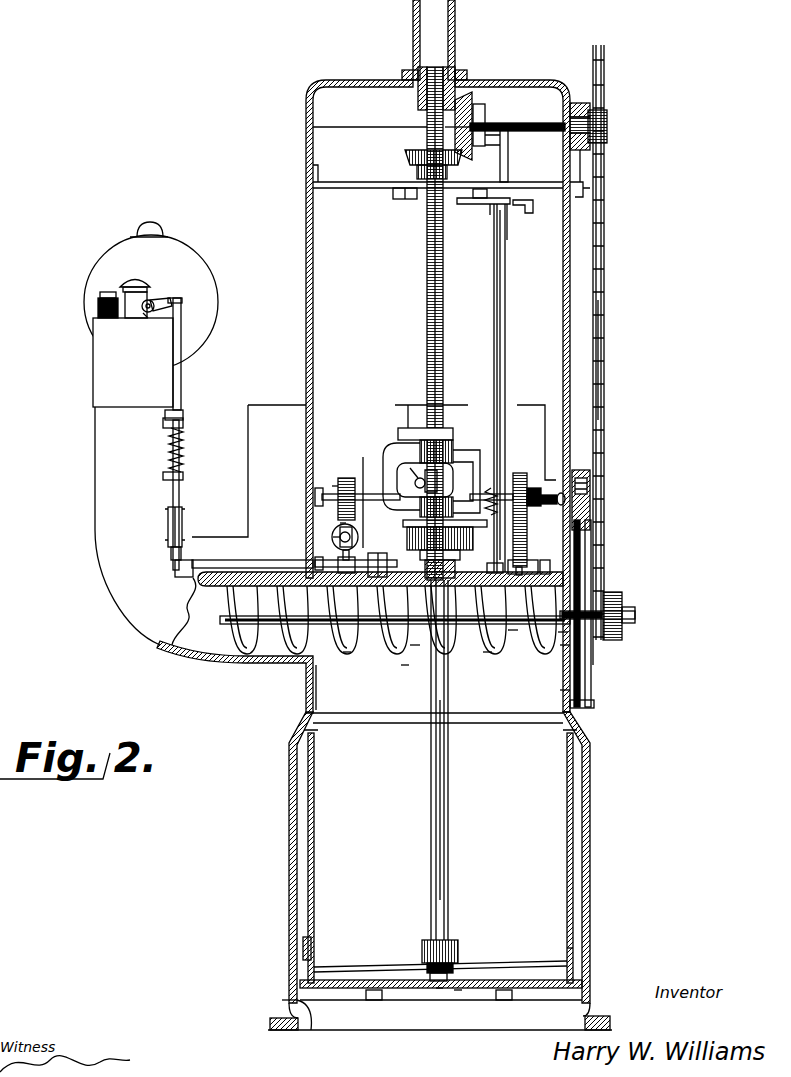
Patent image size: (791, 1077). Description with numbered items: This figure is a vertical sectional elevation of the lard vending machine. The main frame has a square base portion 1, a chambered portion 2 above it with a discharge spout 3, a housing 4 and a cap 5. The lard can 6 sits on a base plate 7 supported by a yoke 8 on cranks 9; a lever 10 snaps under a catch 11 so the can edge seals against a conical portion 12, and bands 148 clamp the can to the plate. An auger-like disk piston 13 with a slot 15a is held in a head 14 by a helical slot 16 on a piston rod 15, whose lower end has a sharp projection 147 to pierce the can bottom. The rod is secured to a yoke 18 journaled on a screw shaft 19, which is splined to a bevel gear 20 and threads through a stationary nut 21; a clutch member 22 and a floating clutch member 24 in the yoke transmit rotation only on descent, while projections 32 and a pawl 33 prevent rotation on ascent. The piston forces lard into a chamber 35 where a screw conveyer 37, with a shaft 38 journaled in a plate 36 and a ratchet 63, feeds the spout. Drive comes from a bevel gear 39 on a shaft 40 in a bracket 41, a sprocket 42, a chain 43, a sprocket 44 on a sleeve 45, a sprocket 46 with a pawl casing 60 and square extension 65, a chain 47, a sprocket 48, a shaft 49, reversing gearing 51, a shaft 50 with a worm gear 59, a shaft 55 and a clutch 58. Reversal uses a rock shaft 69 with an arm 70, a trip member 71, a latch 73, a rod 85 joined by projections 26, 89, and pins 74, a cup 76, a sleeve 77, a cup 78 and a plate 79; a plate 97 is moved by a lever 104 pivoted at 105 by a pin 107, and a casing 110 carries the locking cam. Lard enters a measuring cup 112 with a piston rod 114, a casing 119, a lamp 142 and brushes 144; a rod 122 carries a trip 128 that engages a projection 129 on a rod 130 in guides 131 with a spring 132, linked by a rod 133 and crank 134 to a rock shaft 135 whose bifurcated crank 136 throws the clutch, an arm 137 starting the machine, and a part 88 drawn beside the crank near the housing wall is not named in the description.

The base portion 1 is at (592, 834).
The chambered portion 2 is at (306, 686).
The discharge spout 3 is at (303, 107).
The housing 4 is at (305, 298).
The cap 5 is at (310, 108).
The can 6 is at (314, 836).
The platform or base plate 7 is at (357, 990).
The yoke 8 is at (413, 1000).
The cranks 9 is at (310, 1017).
The lever 10 is at (283, 1012).
The catch 11 is at (287, 998).
The conical portion 12 is at (300, 733).
The disk piston 13 is at (357, 965).
The head 14 is at (422, 957).
The piston rod 15 is at (448, 836).
The slot 15a is at (462, 962).
The helical slot 16 is at (580, 103).
The yoke 18 is at (413, 463).
The screw shaft 19 is at (425, 289).
The bevel gear 20 is at (410, 158).
The stationary nut 21 is at (420, 100).
The clutch member 22 is at (413, 472).
The floating clutch member 24 is at (393, 450).
The projection 26 is at (490, 228).
The projections 32 is at (415, 519).
The pawl 33 is at (372, 640).
The chamber 35 is at (405, 668).
The plate 36 is at (563, 634).
The screw conveyer 37 is at (487, 655).
The shaft 38 is at (513, 632).
The bevel gear 39 is at (467, 97).
The shaft 40 is at (507, 123).
The bracket 41 is at (486, 150).
The sprocket 42 is at (604, 73).
The chain 43 is at (606, 300).
The sprocket 44 is at (600, 652).
The sleeve 45 is at (593, 663).
The sprocket 46 is at (563, 693).
The chain 47 is at (580, 560).
The sprocket 48 is at (580, 470).
The shaft 49 is at (575, 508).
The shaft 50 is at (365, 495).
The reversing gearing 51 is at (518, 478).
The shaft 55 is at (333, 542).
The clutch 58 is at (340, 523).
The worm gear 59 is at (338, 486).
The casing 60 is at (620, 604).
The ratchet 63 is at (565, 645).
The square extension 65 is at (636, 616).
The rock shaft 69 is at (506, 309).
The arm 70 is at (480, 198).
The trip member 71 is at (408, 428).
The latch 73 is at (510, 201).
The pins or actuators 74 is at (458, 993).
The cup 76 is at (455, 958).
The sleeve or connecting member 77 is at (448, 803).
The cup 78 is at (415, 645).
The plate 79 is at (348, 650).
The rod 85 is at (494, 335).
The spring 88 is at (187, 586).
The projection 89 is at (553, 585).
The plate 97 is at (590, 190).
The lever 104 is at (415, 200).
The pivot 105 is at (393, 201).
The pin 107 is at (505, 240).
The casing 110 is at (586, 147).
The measuring cup 112 is at (133, 362).
The piston rod 114 is at (125, 286).
The casing 119 is at (181, 250).
The rod 122 is at (148, 312).
The trip 128 is at (165, 318).
The projection 129 is at (151, 304).
The rod 130 is at (181, 372).
The guides 131 is at (181, 416).
The spring 132 is at (181, 462).
The rod 133 is at (167, 528).
The crank 134 is at (176, 570).
The rock shaft 135 is at (212, 567).
The bifurcated crank 136 is at (333, 537).
The arm 137 is at (385, 577).
The lamp 142 is at (156, 232).
The brushes 144 is at (100, 294).
The sharp projection 147 is at (441, 990).
The bands 148 is at (570, 950).